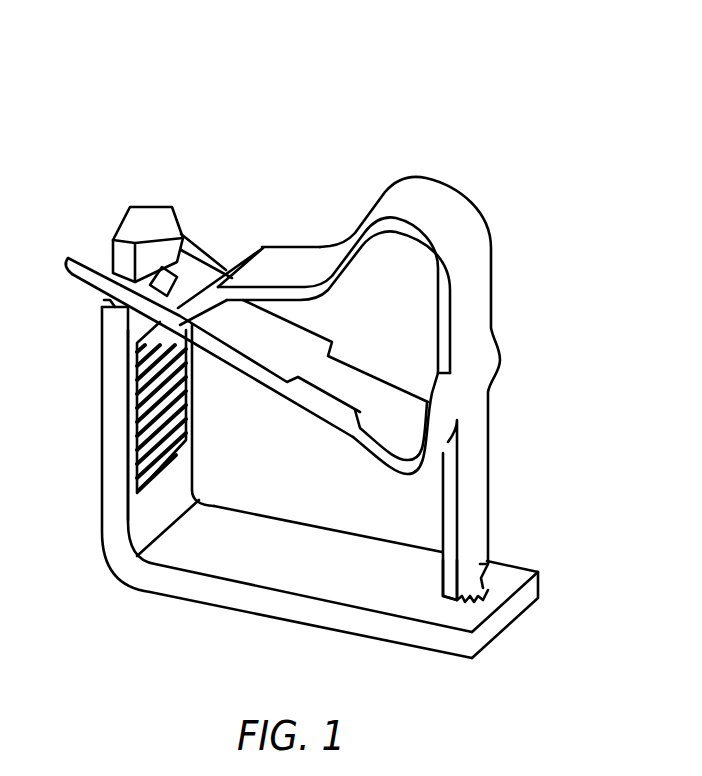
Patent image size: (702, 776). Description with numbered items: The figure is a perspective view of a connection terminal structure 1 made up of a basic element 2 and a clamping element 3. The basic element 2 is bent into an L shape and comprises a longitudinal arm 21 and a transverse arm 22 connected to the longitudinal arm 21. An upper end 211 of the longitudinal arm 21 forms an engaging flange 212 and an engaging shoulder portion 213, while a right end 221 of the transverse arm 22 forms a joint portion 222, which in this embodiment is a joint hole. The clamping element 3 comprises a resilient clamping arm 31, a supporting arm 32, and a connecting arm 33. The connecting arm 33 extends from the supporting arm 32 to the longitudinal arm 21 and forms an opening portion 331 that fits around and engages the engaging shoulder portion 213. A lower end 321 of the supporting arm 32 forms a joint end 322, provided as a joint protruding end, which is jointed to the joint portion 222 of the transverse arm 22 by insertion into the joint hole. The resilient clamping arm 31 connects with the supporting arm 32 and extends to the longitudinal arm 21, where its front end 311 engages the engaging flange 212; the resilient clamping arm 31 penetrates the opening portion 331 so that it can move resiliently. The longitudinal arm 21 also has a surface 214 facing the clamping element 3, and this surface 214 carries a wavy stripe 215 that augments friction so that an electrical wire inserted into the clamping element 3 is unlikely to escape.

The connection terminal structure 1 is at (538, 82).
The basic element 2 is at (136, 582).
The longitudinal arm 21 is at (115, 506).
The upper end 211 is at (152, 214).
The engaging flange 212 is at (160, 290).
The engaging shoulder portion 213 is at (108, 302).
The surface 214 is at (131, 398).
The wavy stripe 215 is at (180, 407).
The transverse arm 22 is at (297, 607).
The right end 221 is at (497, 618).
The joint portion 222 is at (488, 589).
The clamping element 3 is at (468, 220).
The resilient clamping arm 31 is at (297, 266).
The front end 311 is at (187, 288).
The supporting arm 32 is at (480, 300).
The lower end 321 is at (473, 572).
The joint end 322 is at (467, 602).
The connecting arm 33 is at (354, 438).
The opening portion 331 is at (302, 360).